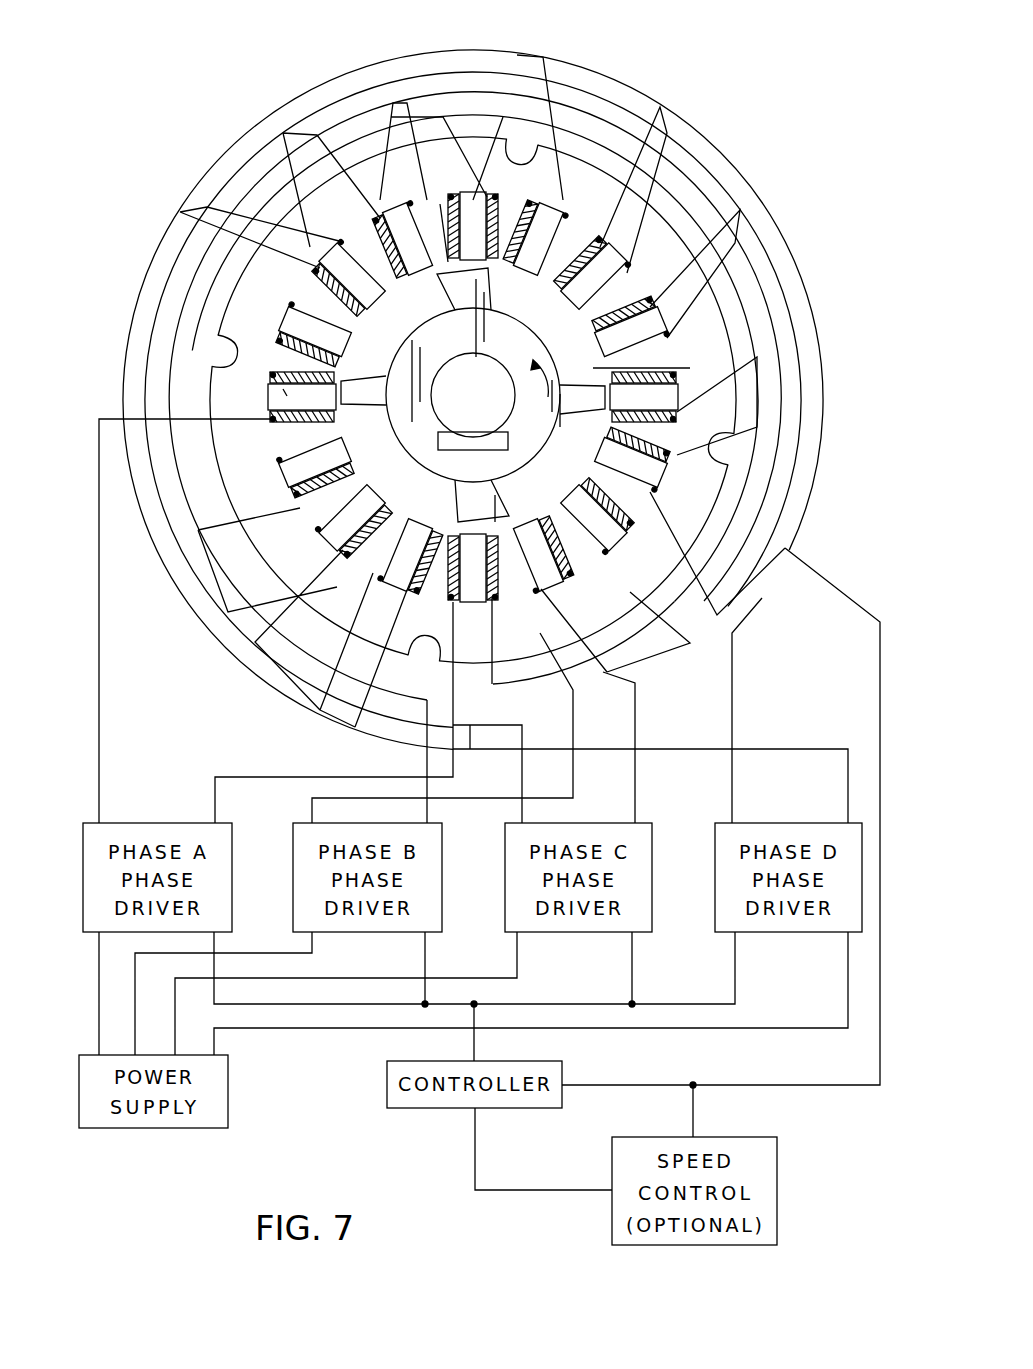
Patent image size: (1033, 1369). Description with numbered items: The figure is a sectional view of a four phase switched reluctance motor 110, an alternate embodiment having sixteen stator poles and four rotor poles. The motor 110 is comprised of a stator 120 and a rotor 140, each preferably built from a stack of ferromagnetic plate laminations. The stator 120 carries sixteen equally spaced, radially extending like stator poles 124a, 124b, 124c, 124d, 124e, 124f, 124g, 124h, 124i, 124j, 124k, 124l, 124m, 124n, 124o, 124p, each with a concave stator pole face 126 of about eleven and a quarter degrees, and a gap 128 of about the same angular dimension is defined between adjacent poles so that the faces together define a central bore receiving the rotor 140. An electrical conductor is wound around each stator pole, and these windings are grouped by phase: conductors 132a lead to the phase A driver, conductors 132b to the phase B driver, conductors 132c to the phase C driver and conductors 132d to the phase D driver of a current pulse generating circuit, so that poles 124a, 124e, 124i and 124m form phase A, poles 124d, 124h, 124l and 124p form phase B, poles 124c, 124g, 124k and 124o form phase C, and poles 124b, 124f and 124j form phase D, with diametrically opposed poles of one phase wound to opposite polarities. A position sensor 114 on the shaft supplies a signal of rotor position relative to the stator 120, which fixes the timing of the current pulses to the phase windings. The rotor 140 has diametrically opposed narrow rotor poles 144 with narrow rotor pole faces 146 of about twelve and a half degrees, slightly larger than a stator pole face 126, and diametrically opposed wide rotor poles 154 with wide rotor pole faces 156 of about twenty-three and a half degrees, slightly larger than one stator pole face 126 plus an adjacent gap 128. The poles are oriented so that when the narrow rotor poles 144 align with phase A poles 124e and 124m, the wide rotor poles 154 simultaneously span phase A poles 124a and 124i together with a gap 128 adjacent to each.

The four phase switched reluctance motor 110 is at (471, 380).
The position sensor 114 is at (450, 443).
The stator 120 is at (280, 213).
The stator pole 124a is at (473, 200).
The stator pole 124b is at (560, 203).
The stator pole 124c is at (627, 273).
The stator pole 124d is at (667, 338).
The stator pole 124e is at (657, 402).
The stator pole 124f is at (637, 468).
The stator pole 124g is at (627, 523).
The stator pole 124h is at (565, 575).
The stator pole 124i is at (574, 576).
The stator pole 124j is at (407, 587).
The stator pole 124k is at (320, 523).
The stator pole 124l is at (280, 458).
The stator pole 124m is at (273, 375).
The stator pole 124n is at (293, 305).
The stator pole 124o is at (317, 270).
The stator pole 124p is at (343, 243).
The stator pole face 126 is at (562, 297).
The gap 128 is at (660, 368).
The phase A conductors 132a is at (100, 758).
The phase B conductors 132b is at (427, 758).
The phase C conductors 132c is at (483, 722).
The phase D conductors 132d is at (796, 747).
The rotor 140 is at (355, 426).
The narrow rotor pole 144 is at (358, 402).
The narrow rotor pole face 146 is at (287, 392).
The wide rotor pole 154 is at (453, 290).
The wide rotor pole face 156 is at (427, 200).